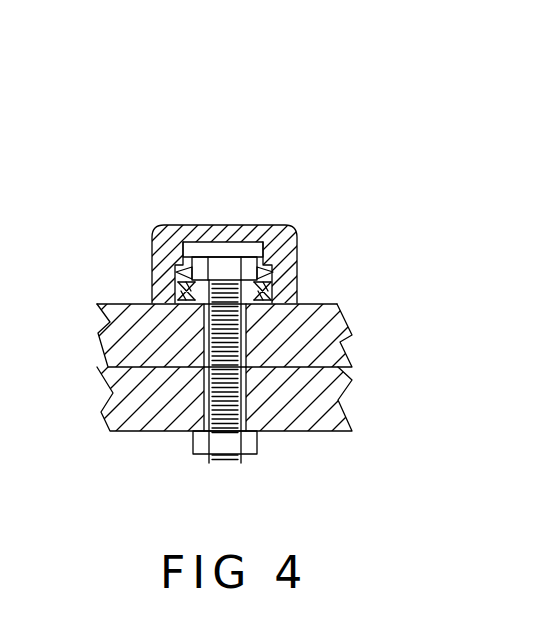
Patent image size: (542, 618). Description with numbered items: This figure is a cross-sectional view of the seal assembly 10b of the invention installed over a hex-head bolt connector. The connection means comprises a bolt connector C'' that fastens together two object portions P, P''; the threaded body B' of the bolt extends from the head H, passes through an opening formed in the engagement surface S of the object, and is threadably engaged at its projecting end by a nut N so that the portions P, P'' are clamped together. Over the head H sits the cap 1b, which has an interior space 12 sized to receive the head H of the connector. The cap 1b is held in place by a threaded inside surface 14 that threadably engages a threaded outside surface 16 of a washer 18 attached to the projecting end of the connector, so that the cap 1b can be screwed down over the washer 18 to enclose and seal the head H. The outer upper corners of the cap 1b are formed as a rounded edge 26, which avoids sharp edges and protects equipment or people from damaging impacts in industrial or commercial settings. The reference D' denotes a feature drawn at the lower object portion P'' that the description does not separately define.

The seal assembly 10b is at (232, 140).
The interior space 12 is at (223, 246).
The cap 1b is at (263, 228).
The rounded edge 26 is at (288, 240).
The washer 18 is at (265, 270).
The threaded outside surface 16 is at (262, 285).
The threaded inside surface 14 is at (192, 280).
The head H is at (222, 265).
The bolt connector C'' is at (139, 283).
The engagement surface S is at (123, 304).
The object portion P is at (213, 344).
The object portion P'' is at (217, 403).
The threaded body B' is at (313, 335).
The bore in lower plate D' is at (313, 386).
The nut N is at (202, 445).